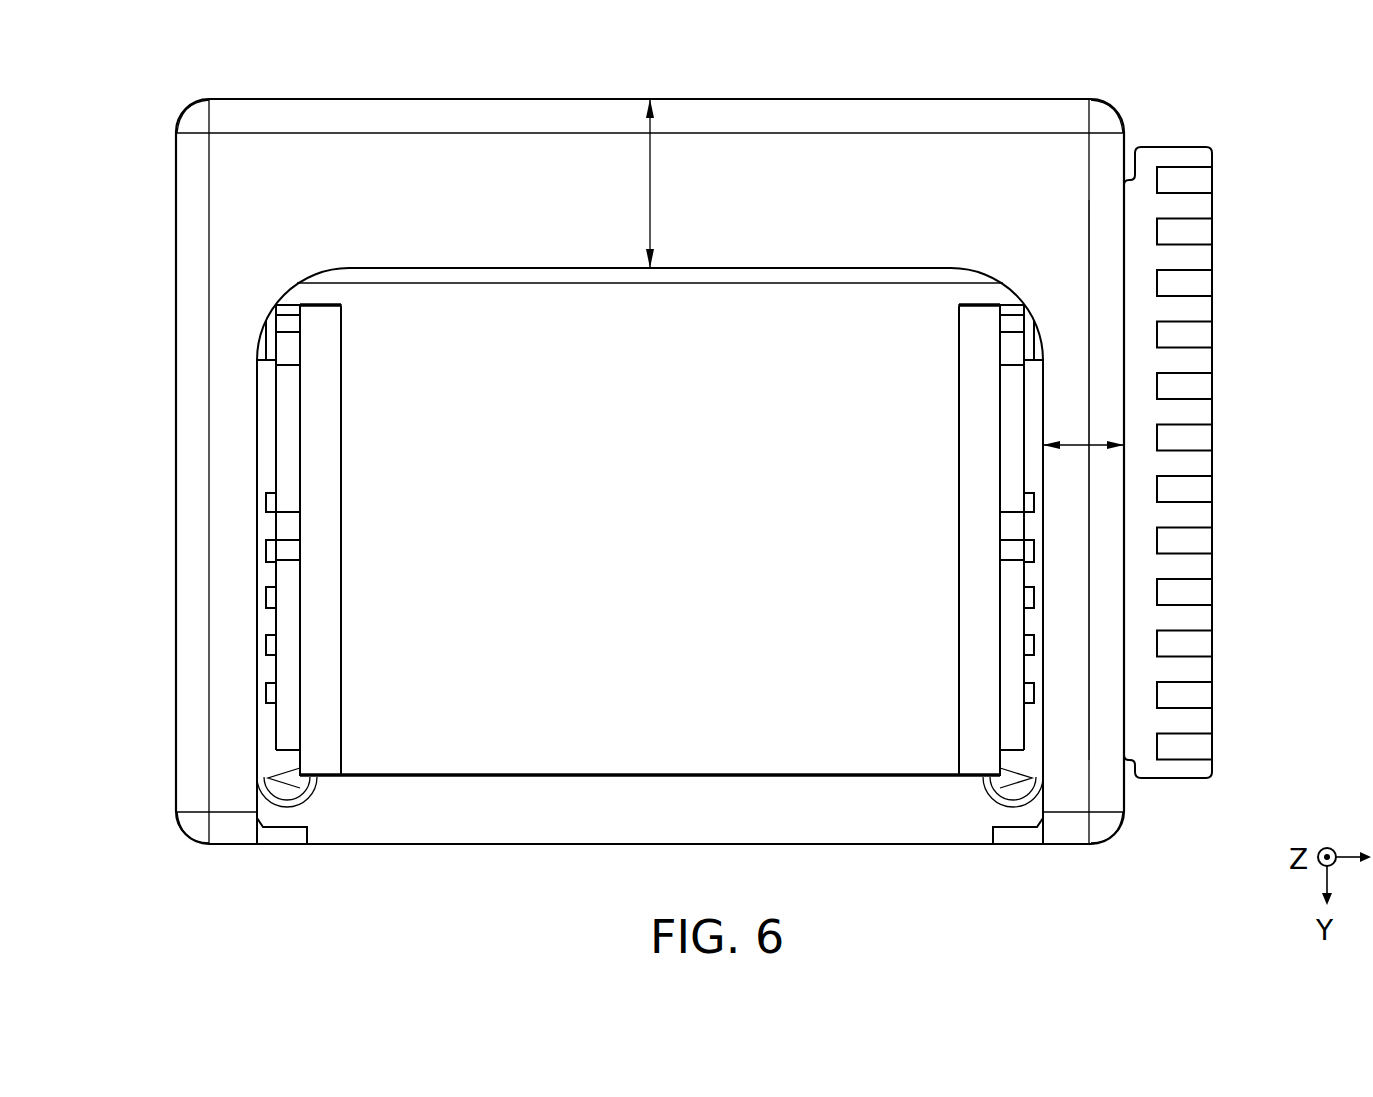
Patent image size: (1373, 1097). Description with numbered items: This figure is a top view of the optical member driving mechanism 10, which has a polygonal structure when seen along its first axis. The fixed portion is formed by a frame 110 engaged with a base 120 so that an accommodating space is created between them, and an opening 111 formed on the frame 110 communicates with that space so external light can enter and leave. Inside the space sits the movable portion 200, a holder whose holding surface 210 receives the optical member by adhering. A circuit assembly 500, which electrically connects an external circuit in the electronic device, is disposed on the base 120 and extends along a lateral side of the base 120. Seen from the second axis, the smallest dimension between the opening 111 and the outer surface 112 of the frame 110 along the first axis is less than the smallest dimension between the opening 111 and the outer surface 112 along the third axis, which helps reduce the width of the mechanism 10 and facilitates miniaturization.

The optical member driving mechanism 10 is at (68, 98).
The frame 110 is at (284, 150).
The opening 111 is at (848, 268).
The outer surface 112 is at (1125, 566).
The base 120 is at (887, 830).
The movable portion 200 is at (420, 778).
The holding surface 210 is at (550, 650).
The circuit assembly 500 is at (1143, 620).